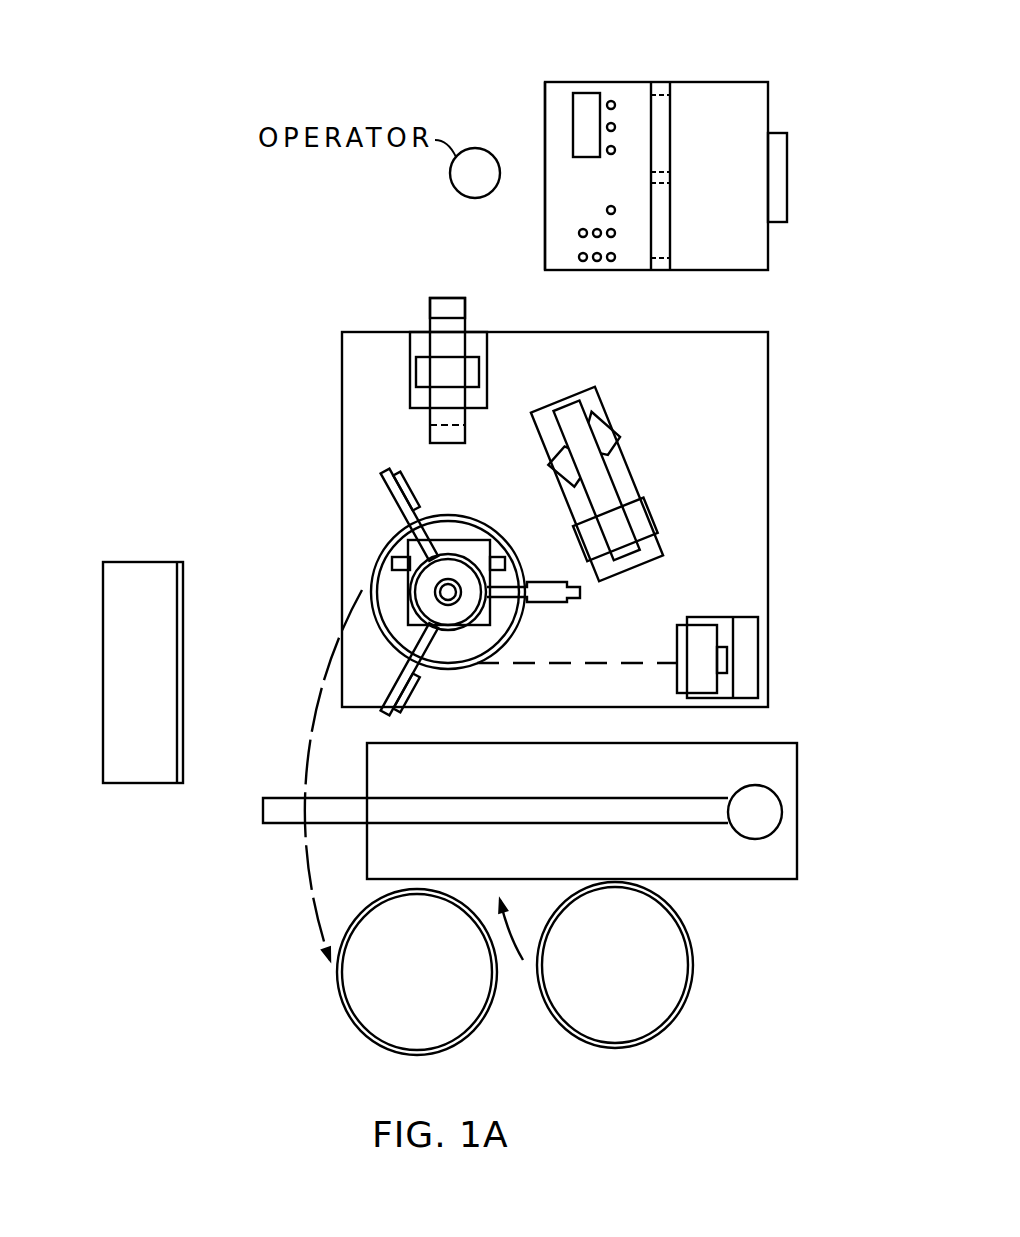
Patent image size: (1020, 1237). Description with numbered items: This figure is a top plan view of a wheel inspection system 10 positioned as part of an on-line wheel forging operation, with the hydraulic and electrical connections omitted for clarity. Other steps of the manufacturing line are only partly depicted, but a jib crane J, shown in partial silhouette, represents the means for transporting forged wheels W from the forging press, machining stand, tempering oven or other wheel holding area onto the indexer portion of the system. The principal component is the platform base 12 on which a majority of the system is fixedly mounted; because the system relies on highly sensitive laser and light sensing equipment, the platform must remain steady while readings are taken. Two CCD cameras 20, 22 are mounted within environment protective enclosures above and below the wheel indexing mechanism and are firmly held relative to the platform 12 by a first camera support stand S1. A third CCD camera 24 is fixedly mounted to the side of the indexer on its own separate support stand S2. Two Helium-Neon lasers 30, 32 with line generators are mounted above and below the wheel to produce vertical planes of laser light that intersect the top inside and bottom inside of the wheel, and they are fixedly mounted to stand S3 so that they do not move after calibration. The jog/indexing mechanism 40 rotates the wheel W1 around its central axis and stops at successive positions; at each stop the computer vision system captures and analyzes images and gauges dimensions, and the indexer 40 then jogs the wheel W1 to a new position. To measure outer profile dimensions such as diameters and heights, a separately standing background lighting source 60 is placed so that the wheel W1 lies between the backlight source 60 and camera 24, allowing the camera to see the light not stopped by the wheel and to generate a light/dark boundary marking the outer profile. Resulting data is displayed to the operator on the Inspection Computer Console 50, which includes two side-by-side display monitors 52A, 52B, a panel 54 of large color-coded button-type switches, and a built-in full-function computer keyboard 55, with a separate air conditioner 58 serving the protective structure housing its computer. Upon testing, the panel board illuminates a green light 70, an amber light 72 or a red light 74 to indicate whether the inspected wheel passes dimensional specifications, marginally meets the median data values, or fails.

The wheel inspection system 10 is at (512, 519).
The platform base 12 is at (743, 401).
The CCD camera 20 is at (607, 430).
The CCD camera 22 is at (652, 503).
The third CCD camera 24 is at (728, 658).
The Helium-Neon laser 30 is at (465, 320).
The Helium-Neon laser 32 is at (430, 303).
The jog/indexing mechanism 40 is at (436, 592).
The Inspection Computer Console 50 is at (663, 158).
The display monitor 52A is at (672, 125).
The display monitor 52B is at (672, 230).
The panel of color-coded button-type switches 54 is at (545, 223).
The computer keyboard 55 is at (573, 108).
The air conditioner 58 is at (787, 183).
The background lighting source 60 is at (138, 560).
The green light 70 is at (609, 98).
The amber light 72 is at (614, 124).
The red light 74 is at (612, 154).
The first camera support stand S1 is at (619, 468).
The separate support stand S2 is at (700, 617).
The laser stand S3 is at (410, 342).
The wheel W1 is at (508, 538).
The jib crane J is at (616, 789).
The forged wheels W is at (428, 1004).